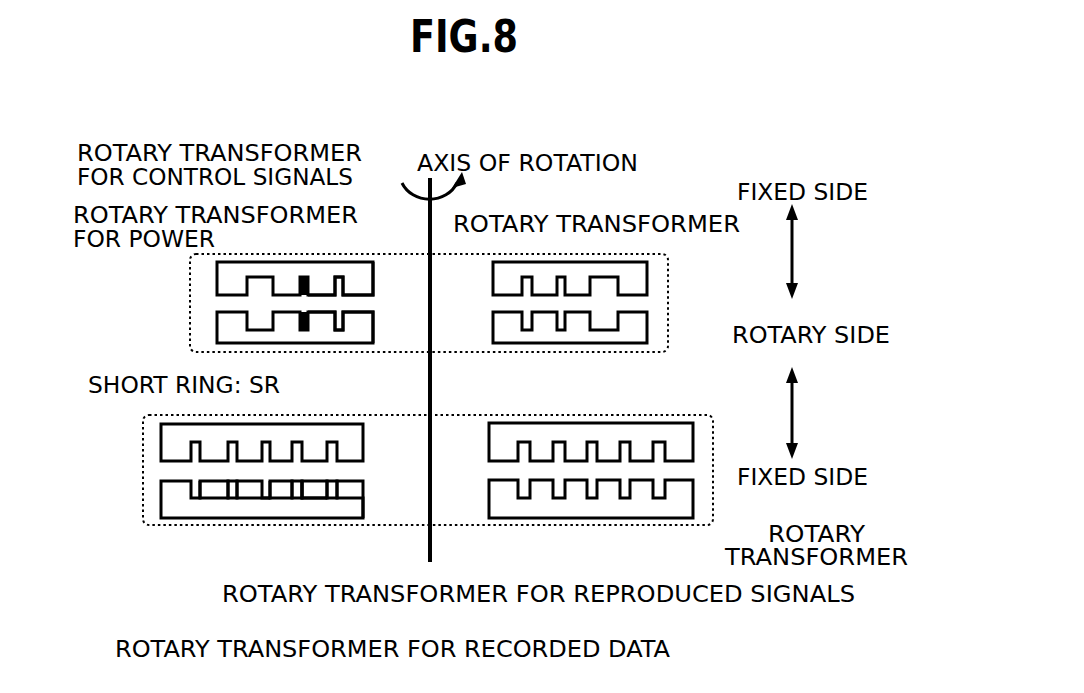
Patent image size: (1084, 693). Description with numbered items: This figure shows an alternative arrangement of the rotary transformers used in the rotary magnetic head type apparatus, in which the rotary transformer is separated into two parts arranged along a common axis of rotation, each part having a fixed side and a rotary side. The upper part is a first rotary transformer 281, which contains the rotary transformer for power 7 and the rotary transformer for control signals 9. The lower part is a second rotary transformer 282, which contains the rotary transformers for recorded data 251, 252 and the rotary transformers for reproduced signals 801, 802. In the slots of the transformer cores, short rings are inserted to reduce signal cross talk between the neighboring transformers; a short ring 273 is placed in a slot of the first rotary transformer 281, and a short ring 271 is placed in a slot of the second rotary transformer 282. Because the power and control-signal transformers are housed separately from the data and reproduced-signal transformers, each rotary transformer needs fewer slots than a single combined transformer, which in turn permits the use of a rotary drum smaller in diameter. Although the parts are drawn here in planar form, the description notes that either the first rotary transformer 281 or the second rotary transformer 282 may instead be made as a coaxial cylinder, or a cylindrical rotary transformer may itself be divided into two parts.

The rotary transformer for power 7 is at (251, 276).
The rotary transformer for control signals 9 is at (343, 282).
The short ring 273 is at (305, 318).
The short ring 271 is at (263, 442).
The first rotary transformer 281 is at (420, 276).
The second rotary transformer 282 is at (476, 512).
The rotary transformer for recorded data 251 is at (228, 498).
The rotary transformer for recorded data 252 is at (191, 498).
The rotary transformer for reproduced signals 801 is at (327, 498).
The rotary transformer for reproduced signals 802 is at (292, 498).